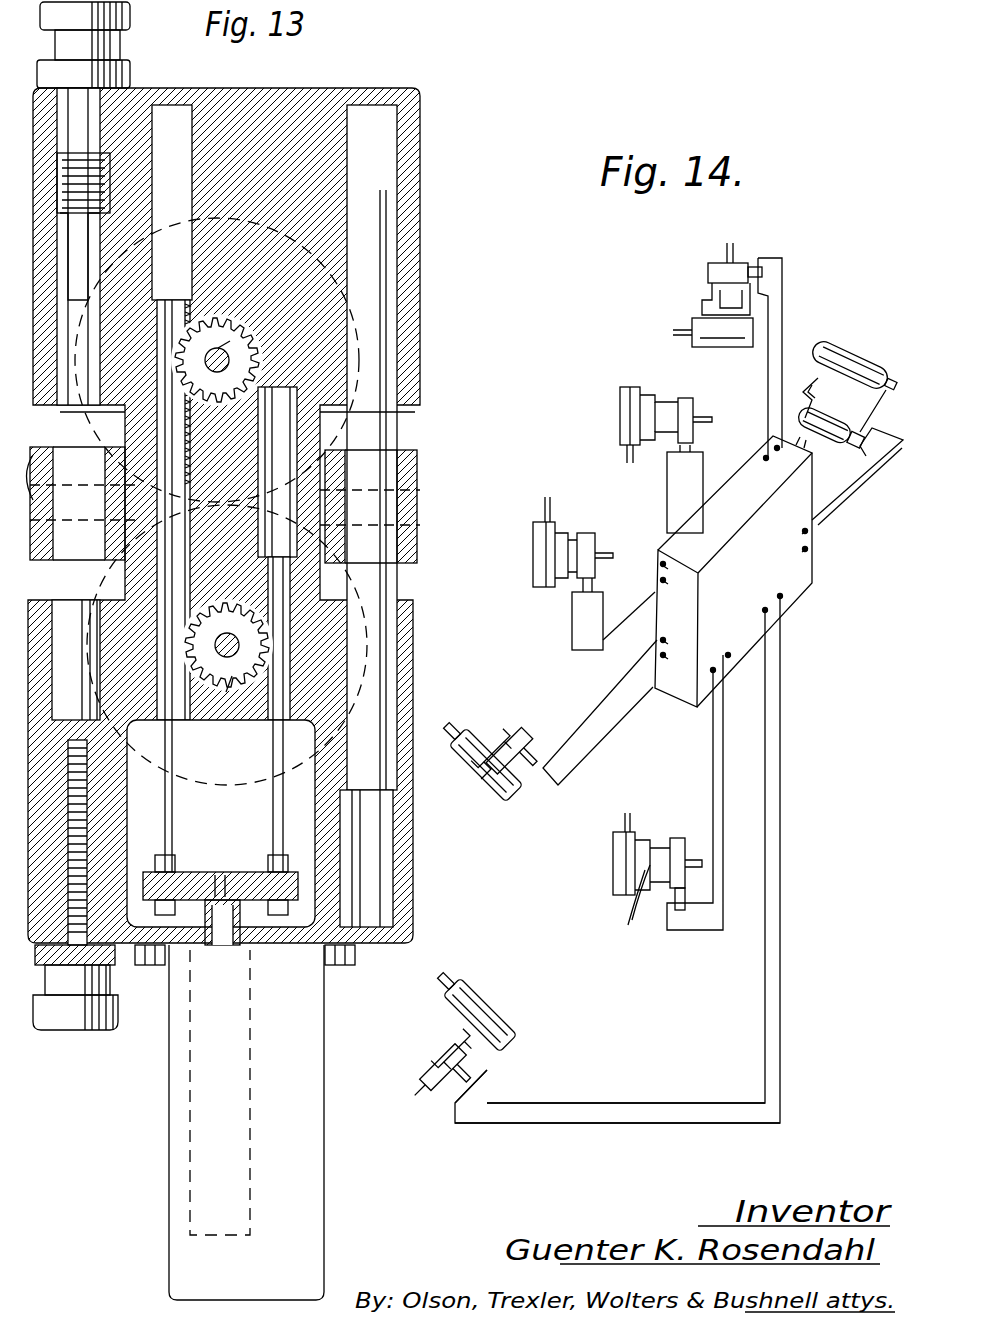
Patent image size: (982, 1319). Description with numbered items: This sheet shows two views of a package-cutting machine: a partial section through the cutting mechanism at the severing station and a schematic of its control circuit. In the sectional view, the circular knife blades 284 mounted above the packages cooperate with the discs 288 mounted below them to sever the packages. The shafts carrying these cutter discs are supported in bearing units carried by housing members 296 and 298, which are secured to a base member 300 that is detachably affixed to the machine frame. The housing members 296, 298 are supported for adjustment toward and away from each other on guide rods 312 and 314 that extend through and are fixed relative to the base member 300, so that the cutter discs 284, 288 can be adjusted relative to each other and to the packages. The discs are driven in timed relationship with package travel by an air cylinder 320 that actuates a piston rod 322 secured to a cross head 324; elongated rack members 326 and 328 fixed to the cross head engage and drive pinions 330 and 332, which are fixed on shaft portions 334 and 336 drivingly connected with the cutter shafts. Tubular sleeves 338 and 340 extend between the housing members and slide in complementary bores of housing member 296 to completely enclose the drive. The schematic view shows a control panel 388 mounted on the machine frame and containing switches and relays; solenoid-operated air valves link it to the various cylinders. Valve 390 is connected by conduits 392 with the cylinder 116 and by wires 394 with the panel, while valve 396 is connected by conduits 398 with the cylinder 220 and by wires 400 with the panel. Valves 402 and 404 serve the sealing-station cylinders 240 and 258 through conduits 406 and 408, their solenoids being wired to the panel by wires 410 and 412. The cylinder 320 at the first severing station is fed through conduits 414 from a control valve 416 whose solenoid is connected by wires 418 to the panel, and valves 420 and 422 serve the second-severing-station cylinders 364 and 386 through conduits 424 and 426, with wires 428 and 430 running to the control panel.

In FIG. 13, the housing member 296 is at (320, 103).
In FIG. 13, the circular knife blades 284 is at (430, 300).
In FIG. 13, the cooperable discs 288 is at (370, 640).
In FIG. 13, the housing member 298 is at (400, 950).
In FIG. 13, the base member 300 is at (33, 548).
In FIG. 13, the guide rod 312 is at (65, 428).
In FIG. 13, the guide rod 314 is at (400, 418).
In FIG. 13, the air cylinder 320 is at (190, 1044).
In FIG. 14, the air cylinder 320 is at (533, 565).
In FIG. 13, the piston rod 322 is at (226, 947).
In FIG. 13, the cross head 324 is at (243, 880).
In FIG. 13, the rack member 326 is at (130, 760).
In FIG. 13, the rack member 328 is at (262, 790).
In FIG. 13, the pinion 330 is at (220, 345).
In FIG. 13, the pinion 332 is at (230, 690).
In FIG. 13, the shaft portion 334 is at (248, 340).
In FIG. 13, the shaft portion 336 is at (232, 598).
In FIG. 13, the tubular sleeve 338 is at (228, 475).
In FIG. 13, the tubular sleeve 340 is at (365, 507).
In FIG. 14, the control panel 388 is at (798, 585).
In FIG. 14, the valve 390 is at (838, 446).
In FIG. 14, the conduits 392 is at (856, 417).
In FIG. 14, the wires 394 is at (845, 505).
In FIG. 14, the valve 396 is at (742, 265).
In FIG. 14, the conduits 398 is at (708, 300).
In FIG. 14, the wires 400 is at (782, 316).
In FIG. 14, the valve 402 is at (696, 405).
In FIG. 14, the valve 404 is at (690, 842).
In FIG. 14, the conduits 406 is at (660, 398).
In FIG. 14, the conduits 408 is at (632, 925).
In FIG. 14, the wires 410 is at (667, 490).
In FIG. 14, the wires 412 is at (723, 772).
In FIG. 14, the conduits 414 is at (575, 535).
In FIG. 14, the control valve 416 is at (600, 548).
In FIG. 14, the wires 418 is at (572, 622).
In FIG. 14, the valve 420 is at (532, 715).
In FIG. 14, the valve 422 is at (445, 1088).
In FIG. 14, the conduits 424 is at (495, 735).
In FIG. 14, the conduits 426 is at (490, 1060).
In FIG. 14, the wires 428 is at (588, 735).
In FIG. 14, the wires 430 is at (515, 1125).
In FIG. 14, the cylinder 116 is at (850, 358).
In FIG. 14, the cylinder 220 is at (729, 348).
In FIG. 14, the cylinder 240 is at (620, 415).
In FIG. 14, the cylinder 258 is at (613, 866).
In FIG. 14, the cylinder 364 is at (480, 790).
In FIG. 14, the cylinder 386 is at (490, 1020).